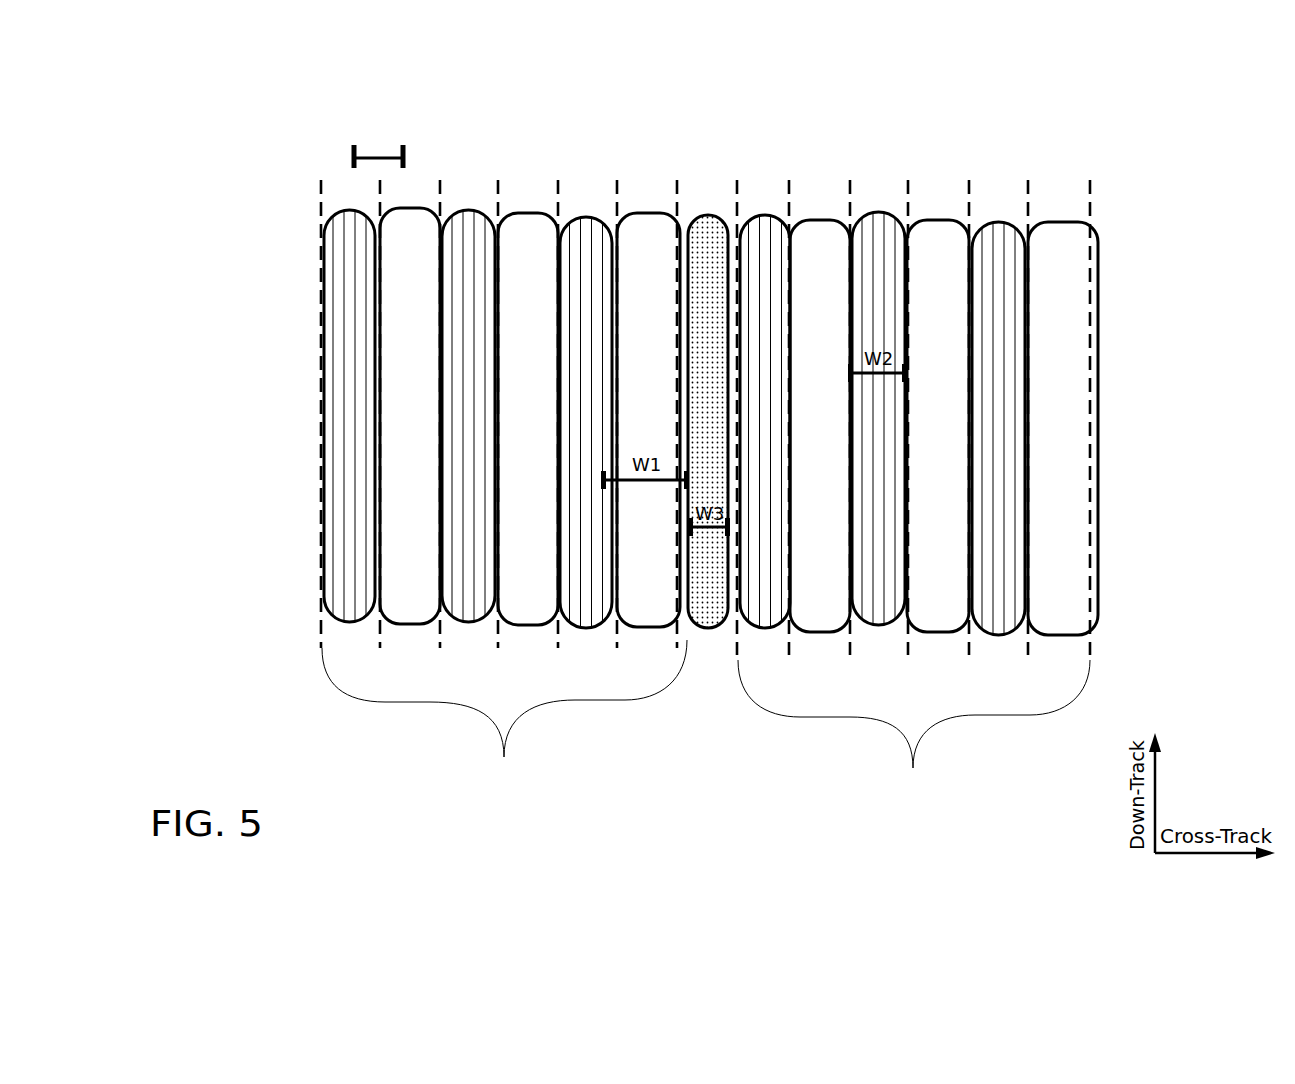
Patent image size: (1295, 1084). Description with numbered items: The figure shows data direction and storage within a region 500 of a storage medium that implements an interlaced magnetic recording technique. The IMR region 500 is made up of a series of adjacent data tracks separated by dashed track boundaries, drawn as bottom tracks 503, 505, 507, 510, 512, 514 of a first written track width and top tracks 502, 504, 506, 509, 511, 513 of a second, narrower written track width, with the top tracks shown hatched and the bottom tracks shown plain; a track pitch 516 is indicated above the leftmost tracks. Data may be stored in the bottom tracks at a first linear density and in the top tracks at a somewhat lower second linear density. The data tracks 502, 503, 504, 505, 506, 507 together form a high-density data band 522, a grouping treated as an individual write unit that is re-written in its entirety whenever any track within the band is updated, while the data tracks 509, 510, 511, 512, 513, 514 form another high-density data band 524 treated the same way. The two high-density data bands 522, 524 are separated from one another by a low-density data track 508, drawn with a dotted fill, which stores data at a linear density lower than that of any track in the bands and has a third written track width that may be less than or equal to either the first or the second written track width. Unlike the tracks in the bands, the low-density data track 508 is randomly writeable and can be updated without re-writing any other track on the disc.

The IMR region 500 is at (241, 90).
The top track 502 is at (361, 208).
The bottom track 503 is at (425, 208).
The top track 504 is at (486, 208).
The bottom track 505 is at (546, 208).
The top track 506 is at (606, 208).
The bottom track 507 is at (670, 208).
The low-density data track 508 is at (726, 208).
The top track 509 is at (785, 208).
The bottom track 510 is at (843, 208).
The top track 511 is at (896, 208).
The bottom track 512 is at (953, 208).
The top track 513 is at (1021, 208).
The bottom track 514 is at (1073, 208).
The track pitch 516 is at (378, 150).
The high-density data band 522 is at (504, 757).
The high-density data band 524 is at (913, 768).